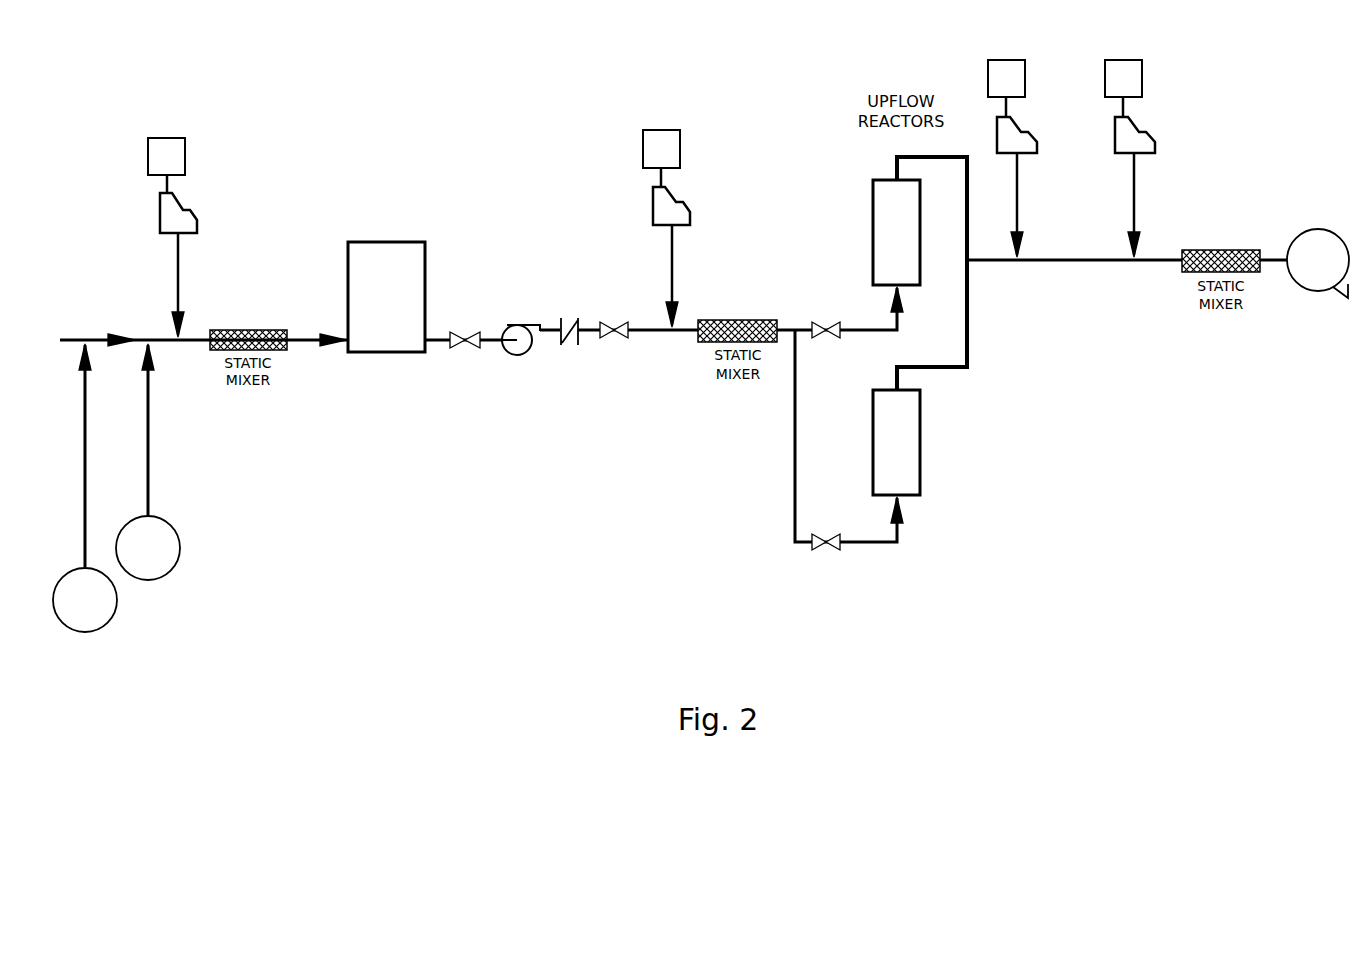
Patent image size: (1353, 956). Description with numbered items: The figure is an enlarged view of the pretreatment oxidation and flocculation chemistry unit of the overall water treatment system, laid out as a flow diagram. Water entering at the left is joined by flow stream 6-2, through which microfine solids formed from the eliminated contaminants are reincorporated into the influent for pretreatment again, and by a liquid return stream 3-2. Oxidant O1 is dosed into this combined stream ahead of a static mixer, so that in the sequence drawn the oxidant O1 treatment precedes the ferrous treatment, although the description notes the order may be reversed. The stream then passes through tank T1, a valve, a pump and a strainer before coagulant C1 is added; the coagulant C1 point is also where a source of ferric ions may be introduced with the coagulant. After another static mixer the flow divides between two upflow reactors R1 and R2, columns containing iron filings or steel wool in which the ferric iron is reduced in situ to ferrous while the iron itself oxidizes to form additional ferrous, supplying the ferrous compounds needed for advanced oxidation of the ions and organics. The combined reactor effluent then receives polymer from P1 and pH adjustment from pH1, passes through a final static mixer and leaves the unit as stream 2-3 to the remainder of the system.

The tank T1 is at (386, 297).
The oxidant O1 is at (167, 224).
The coagulant C1 is at (660, 213).
The polymer feed pump P1 is at (1006, 144).
The pH adjustment feed pump pH1 is at (1133, 137).
The upflow reactor R1 is at (896, 246).
The upflow reactor R2 is at (896, 456).
The flow stream 6-2 is at (85, 488).
The liquid return stream 3-2 is at (176, 462).
The effluent stream 2-3 is at (1318, 263).